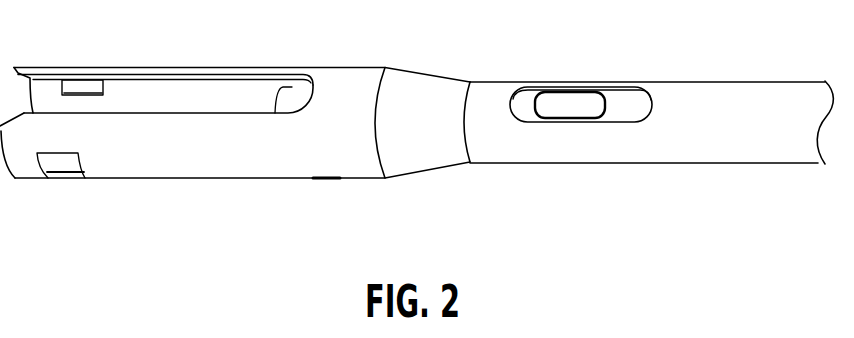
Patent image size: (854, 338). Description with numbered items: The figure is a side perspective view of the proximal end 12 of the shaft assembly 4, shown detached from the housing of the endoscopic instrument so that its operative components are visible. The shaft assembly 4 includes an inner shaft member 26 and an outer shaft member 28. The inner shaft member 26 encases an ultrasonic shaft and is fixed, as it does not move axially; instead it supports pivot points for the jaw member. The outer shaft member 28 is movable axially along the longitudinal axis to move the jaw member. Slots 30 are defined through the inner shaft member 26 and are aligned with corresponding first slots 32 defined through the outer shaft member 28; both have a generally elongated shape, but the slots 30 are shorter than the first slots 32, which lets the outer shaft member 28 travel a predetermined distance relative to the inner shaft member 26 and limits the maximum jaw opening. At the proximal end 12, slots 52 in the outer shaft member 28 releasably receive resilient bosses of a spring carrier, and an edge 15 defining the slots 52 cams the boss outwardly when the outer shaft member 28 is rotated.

The shaft assembly 4 is at (702, 172).
The proximal end 12 is at (675, 98).
The edge 15 is at (75, 178).
The inner shaft member 26 is at (623, 107).
The outer shaft member 28 is at (793, 97).
The slots 30 is at (567, 107).
The first slots 32 is at (613, 81).
The slots 52 is at (81, 88).